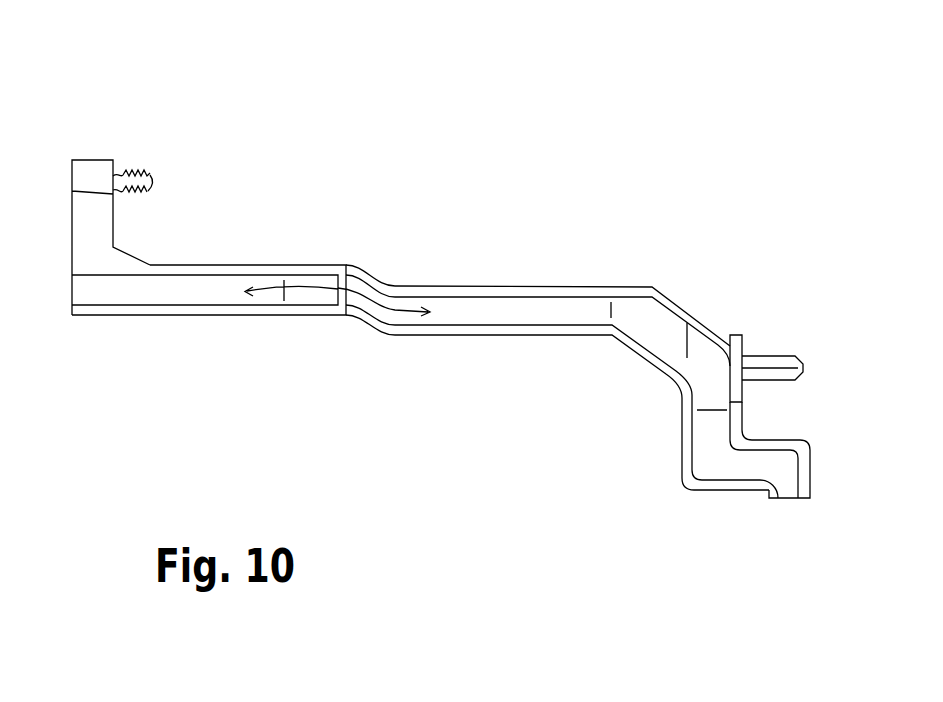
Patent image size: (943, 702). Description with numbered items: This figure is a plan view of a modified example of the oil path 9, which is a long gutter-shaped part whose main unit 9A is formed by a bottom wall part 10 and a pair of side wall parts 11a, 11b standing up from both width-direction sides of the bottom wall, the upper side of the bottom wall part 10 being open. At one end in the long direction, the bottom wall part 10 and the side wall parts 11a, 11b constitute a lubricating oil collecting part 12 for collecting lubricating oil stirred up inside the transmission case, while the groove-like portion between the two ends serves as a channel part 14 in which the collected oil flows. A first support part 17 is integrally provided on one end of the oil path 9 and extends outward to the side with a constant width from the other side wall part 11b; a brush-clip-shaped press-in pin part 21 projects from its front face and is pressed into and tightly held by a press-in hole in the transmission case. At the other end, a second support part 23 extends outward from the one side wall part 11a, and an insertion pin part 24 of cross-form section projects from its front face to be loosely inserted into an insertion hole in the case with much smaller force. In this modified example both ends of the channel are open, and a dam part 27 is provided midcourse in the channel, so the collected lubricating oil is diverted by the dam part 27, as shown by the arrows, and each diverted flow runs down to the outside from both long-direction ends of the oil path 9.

The oil path 9 is at (513, 106).
The main unit 9A is at (263, 257).
The bottom wall part 10 is at (532, 308).
The side wall part 11a is at (597, 291).
The side wall part 11b is at (570, 332).
The lubricating oil collecting part 12 is at (215, 249).
The channel part 14 is at (476, 317).
The first support part 17 is at (96, 170).
The press-in pin part 21 is at (150, 178).
The second support part 23 is at (789, 494).
The insertion pin part 24 is at (767, 362).
The dam part 27 is at (347, 287).